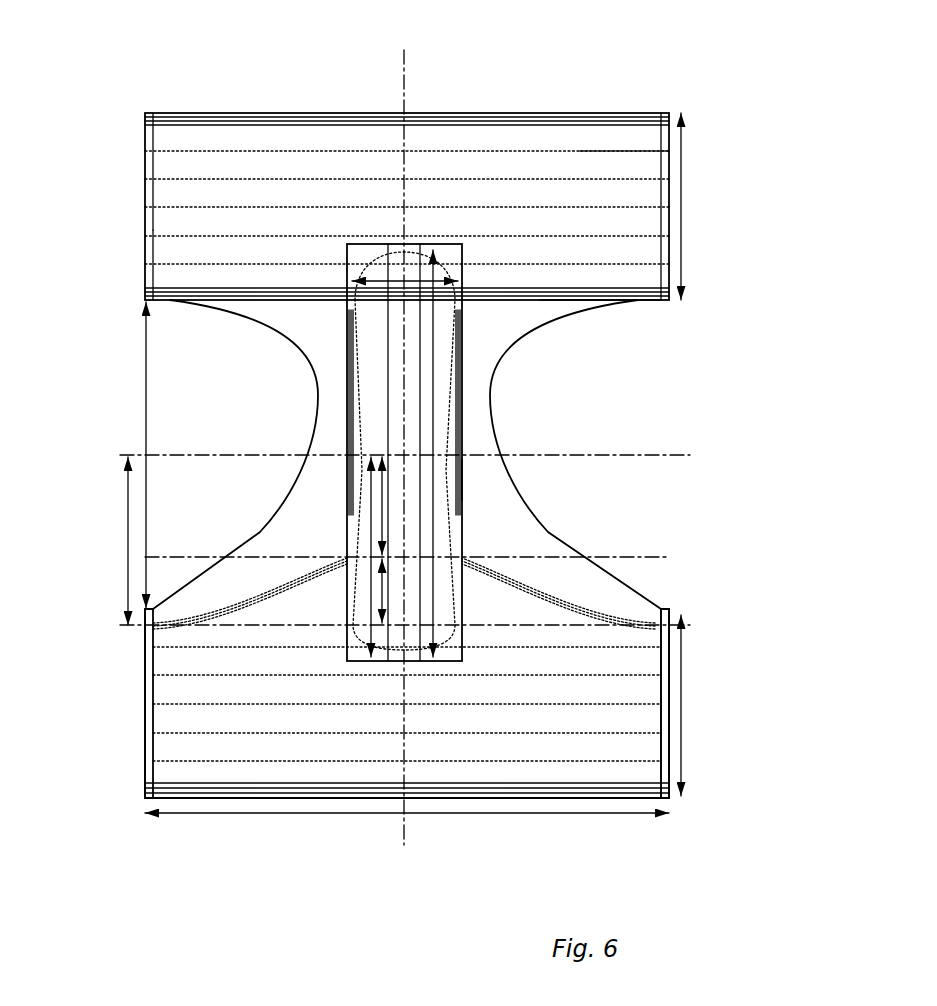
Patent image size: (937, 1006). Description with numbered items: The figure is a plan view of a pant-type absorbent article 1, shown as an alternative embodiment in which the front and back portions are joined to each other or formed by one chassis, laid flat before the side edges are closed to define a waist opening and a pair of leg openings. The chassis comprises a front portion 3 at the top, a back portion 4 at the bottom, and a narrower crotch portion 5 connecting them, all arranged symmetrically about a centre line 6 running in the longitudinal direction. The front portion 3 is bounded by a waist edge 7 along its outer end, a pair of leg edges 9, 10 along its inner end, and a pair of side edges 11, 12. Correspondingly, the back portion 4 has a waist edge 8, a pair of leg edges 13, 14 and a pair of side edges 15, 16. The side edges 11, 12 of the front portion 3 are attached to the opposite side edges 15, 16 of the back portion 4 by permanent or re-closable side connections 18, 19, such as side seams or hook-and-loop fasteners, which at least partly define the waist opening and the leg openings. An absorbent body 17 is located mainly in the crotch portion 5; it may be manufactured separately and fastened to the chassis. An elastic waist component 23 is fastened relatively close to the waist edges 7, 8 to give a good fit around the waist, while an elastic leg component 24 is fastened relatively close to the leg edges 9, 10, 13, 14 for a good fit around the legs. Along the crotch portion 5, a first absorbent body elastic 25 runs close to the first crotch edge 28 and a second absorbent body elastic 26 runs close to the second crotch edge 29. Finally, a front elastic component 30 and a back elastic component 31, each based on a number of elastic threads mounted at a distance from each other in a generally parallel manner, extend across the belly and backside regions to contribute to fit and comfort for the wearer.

The pant-type absorbent article 1 is at (475, 855).
The front portion 3 is at (627, 148).
The back portion 4 is at (655, 685).
The crotch portion 5 is at (356, 410).
The centre line 6 is at (405, 86).
The waist edge 7 is at (487, 113).
The waist edge 8 is at (233, 800).
The leg edge 9 is at (163, 305).
The leg edge 10 is at (582, 302).
The side edge 11 is at (148, 246).
The side edge 12 is at (661, 270).
The leg edge 13 is at (218, 556).
The leg edge 14 is at (625, 580).
The side edge 15 is at (147, 755).
The side edge 16 is at (670, 773).
The absorbent body 17 is at (412, 452).
The side connection 18 is at (147, 213).
The side connection 19 is at (669, 170).
The elastic waist component 23 is at (570, 116).
The elastic leg component 24 is at (217, 293).
The first absorbent body elastic 25 is at (347, 348).
The second absorbent body elastic 26 is at (462, 472).
The first crotch edge 28 is at (345, 318).
The second crotch edge 29 is at (462, 352).
The front elastic component 30 is at (228, 178).
The back elastic component 31 is at (212, 705).